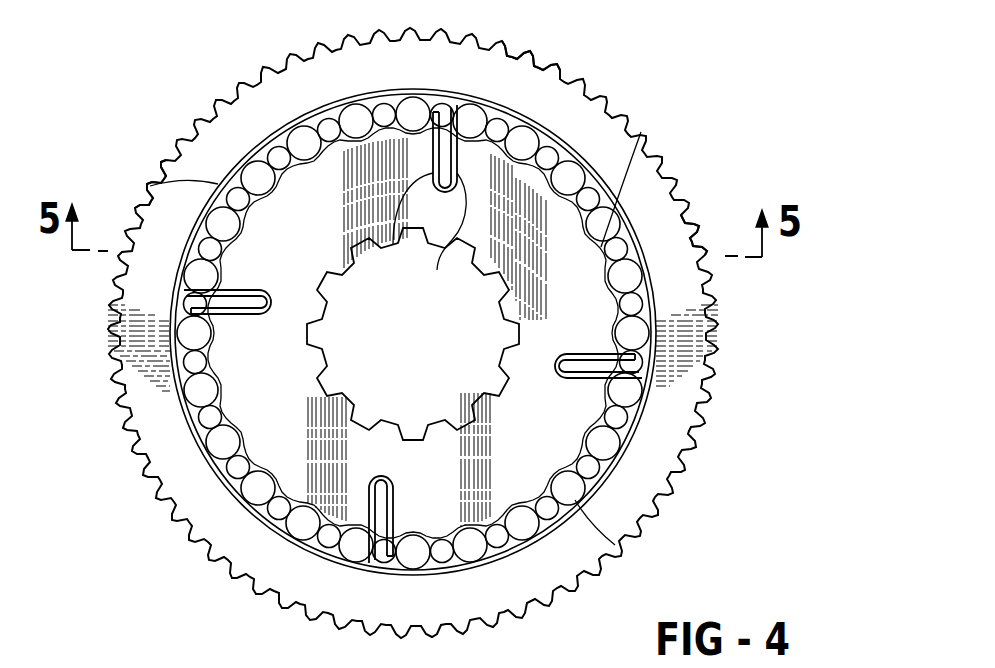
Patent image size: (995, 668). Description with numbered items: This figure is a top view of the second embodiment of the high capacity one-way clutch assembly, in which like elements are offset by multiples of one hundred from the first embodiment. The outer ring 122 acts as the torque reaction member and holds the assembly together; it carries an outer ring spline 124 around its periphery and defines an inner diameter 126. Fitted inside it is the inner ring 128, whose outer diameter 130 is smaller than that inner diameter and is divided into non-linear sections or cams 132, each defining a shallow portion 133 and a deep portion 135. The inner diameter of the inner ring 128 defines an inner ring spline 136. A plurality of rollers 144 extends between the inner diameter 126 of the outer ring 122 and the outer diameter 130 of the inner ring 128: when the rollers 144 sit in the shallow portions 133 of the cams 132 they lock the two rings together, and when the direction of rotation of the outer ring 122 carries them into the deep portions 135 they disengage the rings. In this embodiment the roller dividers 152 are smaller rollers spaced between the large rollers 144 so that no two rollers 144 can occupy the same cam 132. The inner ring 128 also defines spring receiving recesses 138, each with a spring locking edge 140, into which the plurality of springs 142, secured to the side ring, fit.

The outer ring 122 is at (227, 102).
The outer ring spline 124 is at (160, 475).
The inner diameter 126 is at (347, 107).
The inner ring 128 is at (605, 478).
The outer diameter 130 is at (578, 88).
The cam 132 is at (622, 248).
The shallow portion 133 is at (522, 475).
The deep portion 135 is at (530, 475).
The inner ring spline 136 is at (330, 372).
The spring receiving recess 138 is at (386, 233).
The spring locking edge 140 is at (457, 112).
The spring 142 is at (250, 300).
The roller 144 is at (436, 112).
The roller divider 152 is at (150, 186).